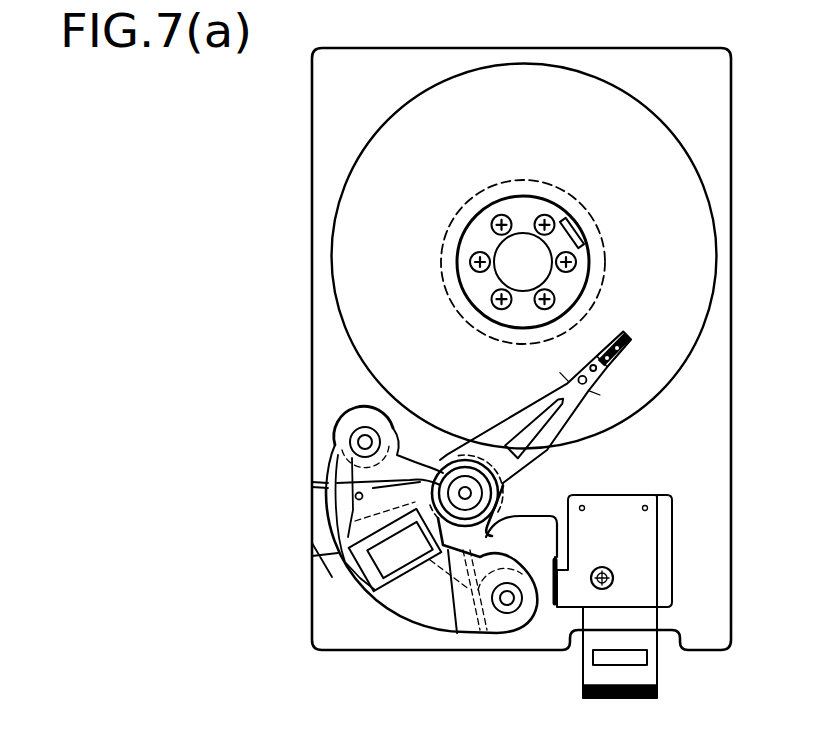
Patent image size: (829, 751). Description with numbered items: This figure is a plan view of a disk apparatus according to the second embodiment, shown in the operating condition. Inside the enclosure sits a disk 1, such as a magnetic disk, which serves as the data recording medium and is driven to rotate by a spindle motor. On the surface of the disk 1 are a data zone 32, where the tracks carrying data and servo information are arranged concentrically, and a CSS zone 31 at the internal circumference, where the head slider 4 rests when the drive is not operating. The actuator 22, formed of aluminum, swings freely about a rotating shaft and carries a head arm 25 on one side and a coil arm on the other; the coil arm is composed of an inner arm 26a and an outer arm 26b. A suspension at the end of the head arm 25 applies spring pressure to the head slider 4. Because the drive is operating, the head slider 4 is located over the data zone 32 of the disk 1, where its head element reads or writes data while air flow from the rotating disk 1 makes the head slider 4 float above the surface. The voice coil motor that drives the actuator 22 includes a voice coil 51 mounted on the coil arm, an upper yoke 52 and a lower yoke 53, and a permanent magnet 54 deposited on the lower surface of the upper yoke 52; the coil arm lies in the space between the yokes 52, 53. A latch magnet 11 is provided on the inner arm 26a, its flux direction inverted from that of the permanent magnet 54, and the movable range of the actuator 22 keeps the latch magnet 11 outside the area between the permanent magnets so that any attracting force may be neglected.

The disk 1 is at (643, 121).
The data zone 32 is at (655, 178).
The CSS zone 31 is at (573, 205).
The actuator 22 is at (490, 438).
The head arm 25 is at (528, 412).
The head slider 4 is at (622, 343).
The latch magnet 11 is at (335, 492).
The inner arm 26a is at (350, 501).
The outer arm 26b is at (437, 610).
The voice coil 51 is at (375, 588).
The upper yoke 52 is at (472, 590).
The lower yoke 53 is at (337, 540).
The permanent magnet 54 is at (342, 553).